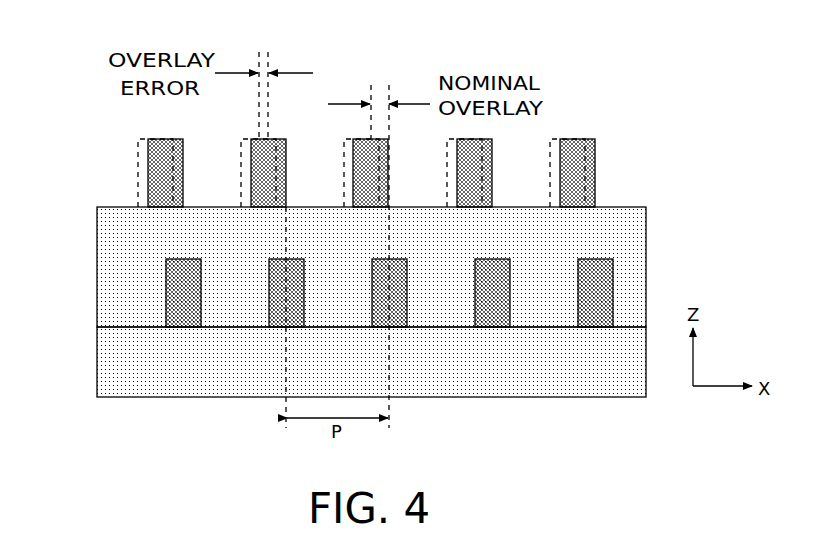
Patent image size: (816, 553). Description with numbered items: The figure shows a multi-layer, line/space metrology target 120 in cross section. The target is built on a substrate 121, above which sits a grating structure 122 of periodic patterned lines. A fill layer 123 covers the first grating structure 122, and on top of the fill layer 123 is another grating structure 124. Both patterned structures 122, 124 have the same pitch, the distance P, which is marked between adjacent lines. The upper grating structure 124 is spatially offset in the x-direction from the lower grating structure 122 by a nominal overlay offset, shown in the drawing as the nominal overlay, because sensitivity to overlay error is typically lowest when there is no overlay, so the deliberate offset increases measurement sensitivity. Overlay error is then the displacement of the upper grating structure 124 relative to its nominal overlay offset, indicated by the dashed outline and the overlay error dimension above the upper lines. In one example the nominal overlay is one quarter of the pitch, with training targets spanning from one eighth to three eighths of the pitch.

The multi-layer metrology target 120 is at (686, 86).
The substrate 121 is at (97, 366).
The grating structure 122 is at (166, 296).
The fill layer 123 is at (97, 238).
The grating structure 124 is at (148, 167).